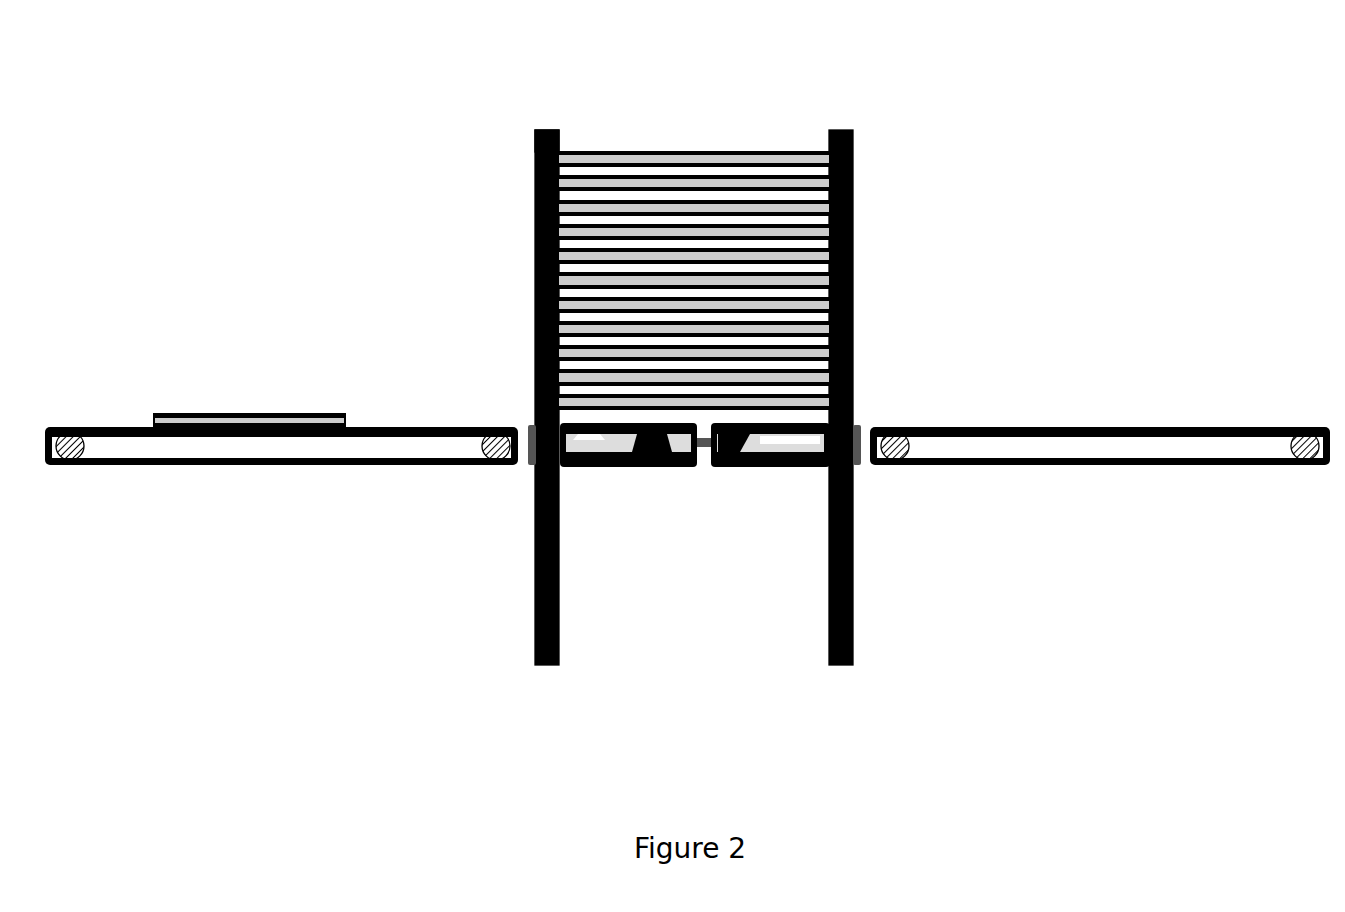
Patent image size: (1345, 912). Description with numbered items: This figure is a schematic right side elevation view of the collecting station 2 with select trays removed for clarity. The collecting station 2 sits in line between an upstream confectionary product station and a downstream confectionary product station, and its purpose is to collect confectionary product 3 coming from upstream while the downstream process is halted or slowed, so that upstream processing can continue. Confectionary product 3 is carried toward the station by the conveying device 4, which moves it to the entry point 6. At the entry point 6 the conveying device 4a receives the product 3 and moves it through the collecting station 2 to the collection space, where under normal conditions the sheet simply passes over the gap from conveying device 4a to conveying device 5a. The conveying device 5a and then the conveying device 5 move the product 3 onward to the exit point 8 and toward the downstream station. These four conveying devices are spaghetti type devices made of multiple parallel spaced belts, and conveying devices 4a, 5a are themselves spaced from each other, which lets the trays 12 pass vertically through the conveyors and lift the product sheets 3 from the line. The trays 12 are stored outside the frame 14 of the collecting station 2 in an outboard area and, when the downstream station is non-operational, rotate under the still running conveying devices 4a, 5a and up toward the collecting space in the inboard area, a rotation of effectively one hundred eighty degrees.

The collecting station 2 is at (1050, 178).
The confectionary product 3 is at (221, 411).
The conveying device 4 is at (378, 424).
The conveying device 4a is at (611, 425).
The conveying device 5 is at (1083, 424).
The conveying device 5a is at (790, 421).
The entry point 6 is at (527, 250).
The exit point 8 is at (876, 288).
The trays 12 is at (736, 148).
The frame 14 is at (547, 126).